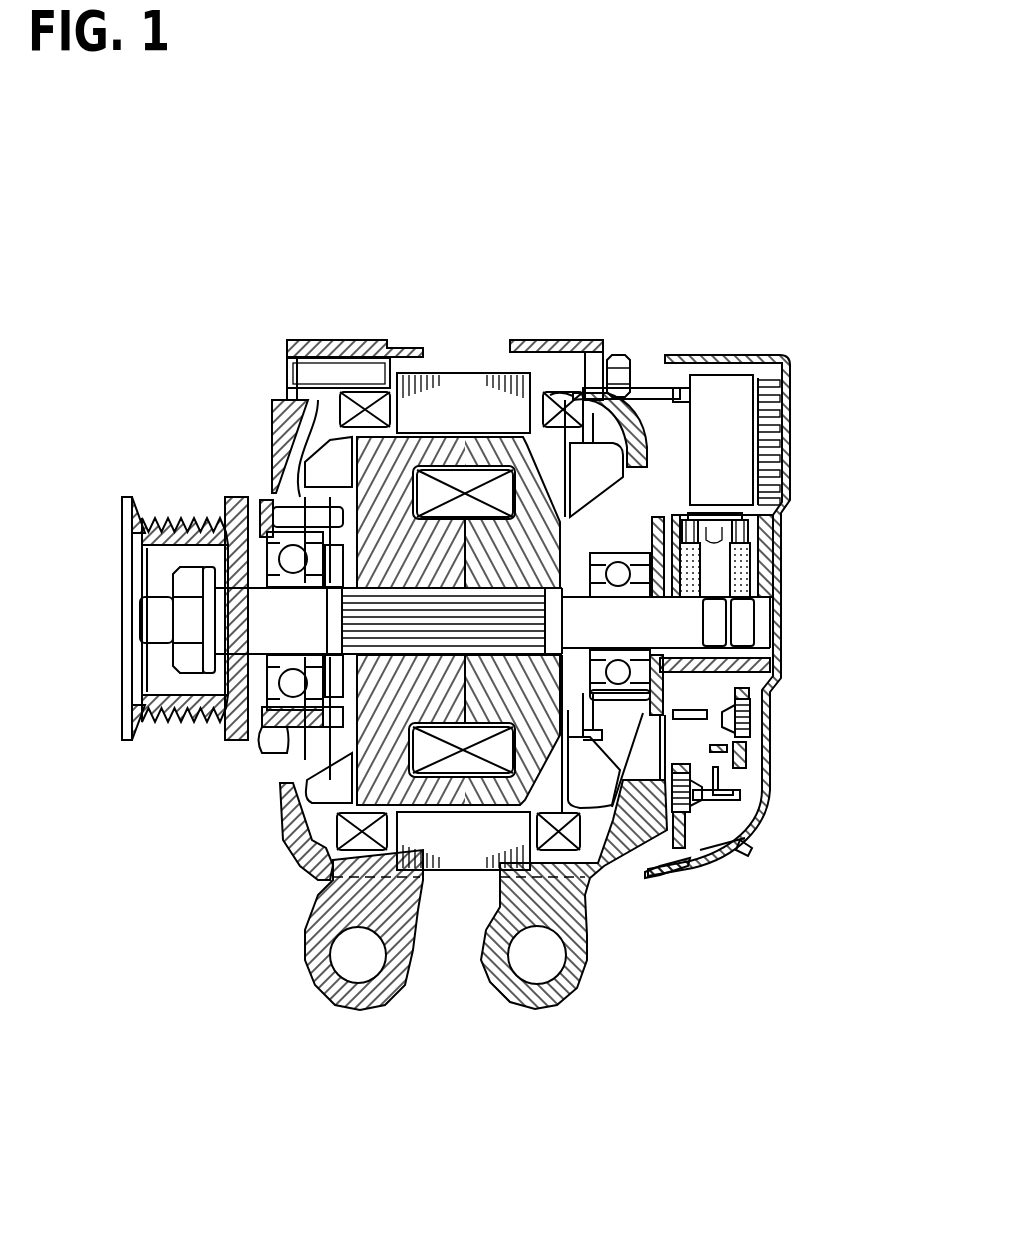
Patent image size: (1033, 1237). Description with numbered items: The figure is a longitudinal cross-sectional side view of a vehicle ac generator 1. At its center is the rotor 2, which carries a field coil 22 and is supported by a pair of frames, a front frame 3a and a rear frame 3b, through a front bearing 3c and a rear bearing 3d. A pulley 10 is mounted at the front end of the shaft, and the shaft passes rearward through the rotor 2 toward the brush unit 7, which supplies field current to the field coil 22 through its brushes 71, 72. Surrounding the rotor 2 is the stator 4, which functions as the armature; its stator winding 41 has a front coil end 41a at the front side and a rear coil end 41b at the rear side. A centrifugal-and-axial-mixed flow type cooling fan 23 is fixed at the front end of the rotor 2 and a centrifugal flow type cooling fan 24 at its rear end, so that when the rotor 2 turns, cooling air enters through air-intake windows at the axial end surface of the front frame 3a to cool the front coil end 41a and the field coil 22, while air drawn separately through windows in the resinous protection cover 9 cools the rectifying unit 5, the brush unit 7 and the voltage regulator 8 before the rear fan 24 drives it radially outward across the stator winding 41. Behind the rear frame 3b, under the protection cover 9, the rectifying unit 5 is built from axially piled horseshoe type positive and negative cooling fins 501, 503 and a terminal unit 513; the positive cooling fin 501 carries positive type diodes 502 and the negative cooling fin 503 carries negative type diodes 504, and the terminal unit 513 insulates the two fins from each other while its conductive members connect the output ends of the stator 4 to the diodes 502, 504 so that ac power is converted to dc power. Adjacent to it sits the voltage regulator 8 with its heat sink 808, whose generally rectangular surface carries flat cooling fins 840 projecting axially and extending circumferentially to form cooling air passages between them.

The ac generator 1 is at (668, 218).
The rotor 2 is at (387, 511).
The field coil 22 is at (465, 480).
The cooling fan 23 is at (330, 458).
The cooling fan 24 is at (608, 462).
The front frame 3a is at (350, 998).
The rear frame 3b is at (537, 997).
The front bearing 3c is at (293, 538).
The rear bearing 3d is at (627, 657).
The stator 4 is at (478, 543).
The stator winding 41 is at (368, 397).
The front coil end 41a is at (325, 400).
The stator winding rear coil end 41b is at (596, 345).
The rectifying unit 5 is at (745, 872).
The positive cooling fin 501 is at (738, 755).
The positive type diode 502 is at (743, 713).
The negative cooling fin 503 is at (662, 873).
The negative type diode 504 is at (745, 847).
The terminal unit 513 is at (733, 777).
The brush unit 7 is at (778, 556).
The brush 71 is at (715, 562).
The brush 72 is at (740, 587).
The voltage regulator 8 is at (718, 385).
The heat sink 808 is at (760, 370).
The cooling fin 840 is at (787, 370).
The protection cover 9 is at (742, 916).
The pulley 10 is at (127, 707).